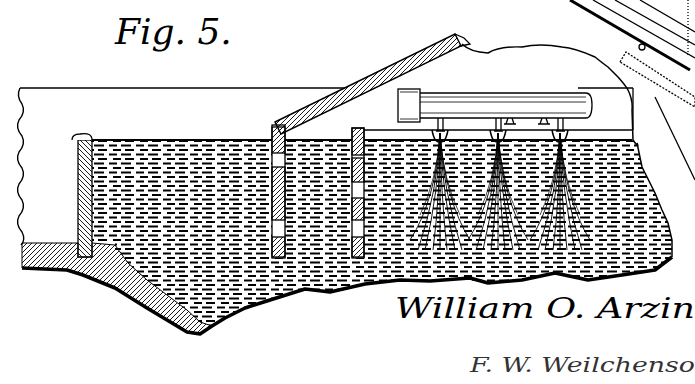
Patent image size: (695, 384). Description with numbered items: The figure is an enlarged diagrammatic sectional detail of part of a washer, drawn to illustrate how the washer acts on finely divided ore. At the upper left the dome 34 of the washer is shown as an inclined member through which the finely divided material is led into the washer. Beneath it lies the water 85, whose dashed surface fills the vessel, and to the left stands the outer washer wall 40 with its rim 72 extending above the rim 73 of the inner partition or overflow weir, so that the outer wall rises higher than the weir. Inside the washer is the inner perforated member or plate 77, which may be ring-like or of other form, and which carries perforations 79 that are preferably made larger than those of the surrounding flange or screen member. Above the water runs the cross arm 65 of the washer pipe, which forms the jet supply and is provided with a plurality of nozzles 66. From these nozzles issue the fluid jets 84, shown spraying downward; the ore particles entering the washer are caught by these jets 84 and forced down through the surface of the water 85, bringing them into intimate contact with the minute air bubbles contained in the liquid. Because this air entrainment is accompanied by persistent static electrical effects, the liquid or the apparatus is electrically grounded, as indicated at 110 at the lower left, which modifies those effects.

The dome 34 is at (378, 80).
The tank wall 40 is at (88, 185).
The cross arm 65 is at (466, 93).
The nozzles 66 is at (548, 118).
The rim of outer washer wall 72 is at (70, 88).
The rim of weir 73 is at (83, 134).
The inner perforated member or plate 77 is at (350, 132).
The perforations of inner member 79 is at (360, 170).
The fluid jets 84 is at (436, 131).
The water 85 is at (215, 138).
The electrical ground 110 is at (55, 340).